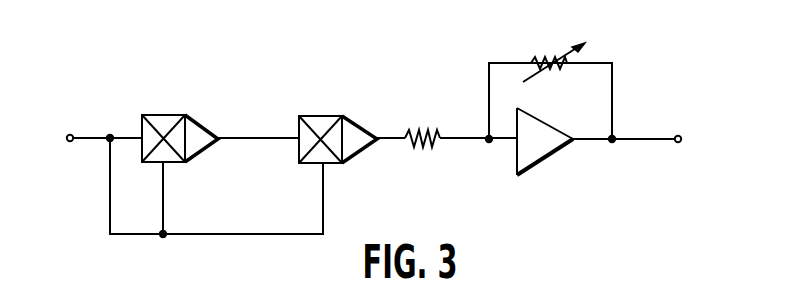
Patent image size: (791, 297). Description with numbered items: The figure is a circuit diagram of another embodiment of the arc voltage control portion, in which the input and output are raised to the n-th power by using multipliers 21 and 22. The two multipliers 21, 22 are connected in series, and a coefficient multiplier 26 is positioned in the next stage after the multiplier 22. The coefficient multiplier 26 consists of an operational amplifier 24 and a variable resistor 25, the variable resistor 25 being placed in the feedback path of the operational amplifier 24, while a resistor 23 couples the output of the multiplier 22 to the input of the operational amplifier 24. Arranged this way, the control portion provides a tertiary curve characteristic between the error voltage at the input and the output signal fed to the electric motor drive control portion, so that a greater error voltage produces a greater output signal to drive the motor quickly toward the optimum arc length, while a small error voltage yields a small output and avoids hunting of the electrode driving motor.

The multiplier 21 is at (160, 115).
The multiplier 22 is at (320, 116).
The input resistor 23 is at (424, 130).
The operational amplifier 24 is at (544, 160).
The variable resistor 25 is at (562, 58).
The coefficient multiplier 26 is at (643, 112).